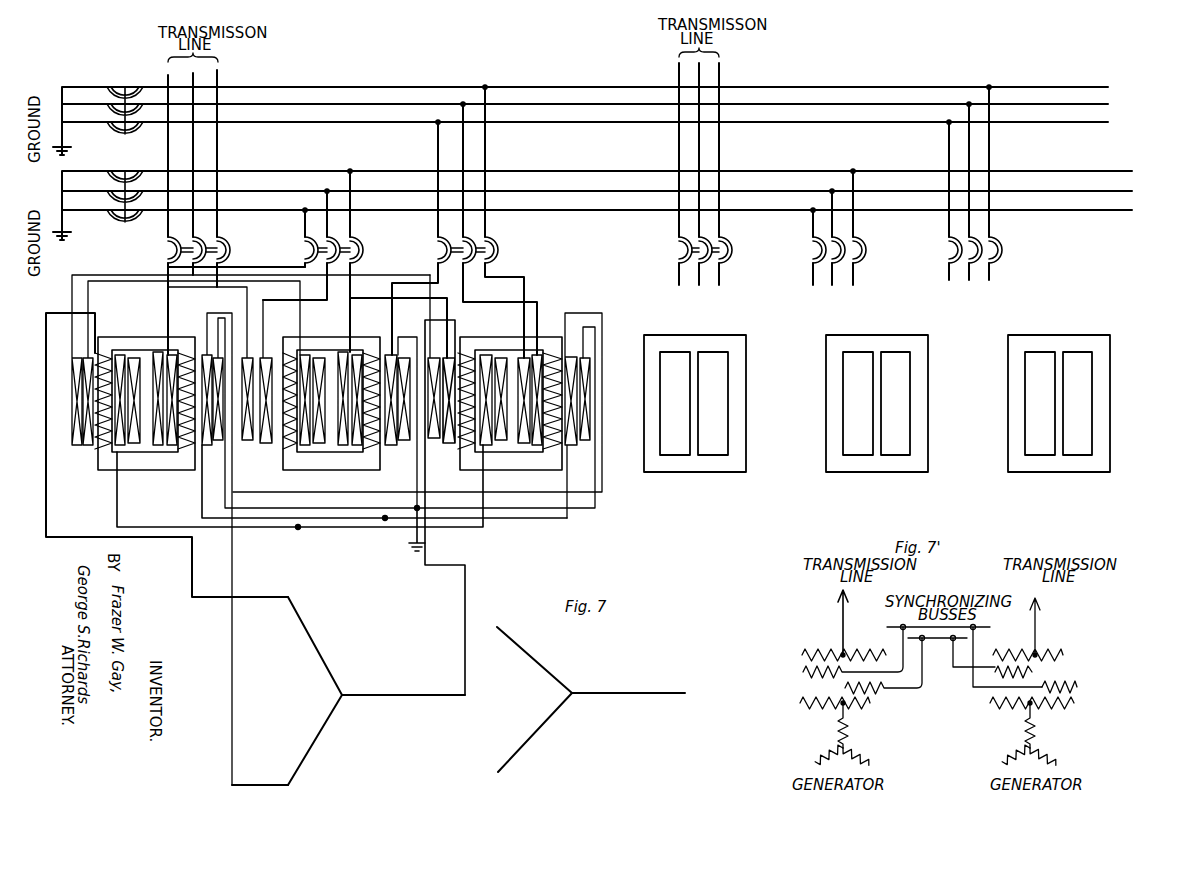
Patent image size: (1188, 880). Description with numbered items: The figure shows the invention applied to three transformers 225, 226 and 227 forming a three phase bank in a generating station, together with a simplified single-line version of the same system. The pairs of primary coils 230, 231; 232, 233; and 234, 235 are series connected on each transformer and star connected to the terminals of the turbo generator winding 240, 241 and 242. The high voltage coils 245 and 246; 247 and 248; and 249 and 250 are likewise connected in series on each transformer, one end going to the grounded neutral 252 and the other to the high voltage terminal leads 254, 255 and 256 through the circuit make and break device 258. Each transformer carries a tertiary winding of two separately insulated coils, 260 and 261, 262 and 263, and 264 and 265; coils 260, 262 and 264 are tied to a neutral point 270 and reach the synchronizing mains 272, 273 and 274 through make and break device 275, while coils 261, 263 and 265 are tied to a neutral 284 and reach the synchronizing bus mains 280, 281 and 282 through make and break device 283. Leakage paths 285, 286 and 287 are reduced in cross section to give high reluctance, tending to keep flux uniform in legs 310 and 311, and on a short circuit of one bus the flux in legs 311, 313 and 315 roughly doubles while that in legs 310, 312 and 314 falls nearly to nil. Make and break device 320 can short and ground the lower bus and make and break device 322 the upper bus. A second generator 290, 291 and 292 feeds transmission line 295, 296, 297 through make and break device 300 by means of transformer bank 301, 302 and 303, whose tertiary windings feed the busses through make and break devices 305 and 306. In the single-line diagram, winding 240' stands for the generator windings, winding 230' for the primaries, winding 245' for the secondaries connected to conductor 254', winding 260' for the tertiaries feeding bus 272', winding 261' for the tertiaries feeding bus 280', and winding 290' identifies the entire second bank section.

In FIG. 7, the make and break device 322 is at (112, 84).
In FIG. 7, the make and break device 320 is at (112, 220).
In FIG. 7, the high voltage terminal lead 254 is at (211, 209).
In FIG. 7, the high voltage terminal lead 255 is at (195, 72).
In FIG. 7, the high voltage terminal lead 256 is at (219, 80).
In FIG. 7, the circuit make and break device 258 is at (305, 251).
In FIG. 7, the synchronizing main 273 is at (308, 250).
In FIG. 7, the synchronizing main 272 is at (347, 263).
In FIG. 7, the synchronizing bus main 281 is at (396, 103).
In FIG. 7, the synchronizing bus main 282 is at (460, 87).
In FIG. 7, the circuit make and break device 275 is at (337, 248).
In FIG. 7, the circuit make and break device 283 is at (498, 248).
In FIG. 7, the synchronizing bus main 280 is at (580, 121).
In FIG. 7, the synchronizing main 274 is at (389, 171).
In FIG. 7, the transmission line conductor 295 is at (679, 76).
In FIG. 7, the transmission line conductor 296 is at (699, 66).
In FIG. 7, the transmission line conductor 297 is at (719, 75).
In FIG. 7, the make and break device 300 is at (728, 246).
In FIG. 7, the make and break device 305 is at (866, 246).
In FIG. 7, the make and break device 306 is at (1008, 246).
In FIG. 7, the transformer 225 is at (132, 326).
In FIG. 7, the transformer 226 is at (302, 337).
In FIG. 7, the transformer 227 is at (496, 337).
In FIG. 7, the magnetic leg 312 is at (287, 353).
In FIG. 7, the magnetic leg 313 is at (368, 350).
In FIG. 7, the magnetic leg 314 is at (475, 350).
In FIG. 7, the magnetic leg 315 is at (553, 350).
In FIG. 7, the transformer 301 is at (730, 342).
In FIG. 7, the transformer 302 is at (903, 342).
In FIG. 7, the transformer 303 is at (1078, 342).
In FIG. 7, the high voltage coil 245 is at (239, 368).
In FIG. 7, the tertiary coil 260 is at (180, 380).
In FIG. 7, the primary coil 230 is at (167, 455).
In FIG. 7, the magnetic leg 310 is at (122, 455).
In FIG. 7, the leakage path 285 is at (142, 453).
In FIG. 7, the magnetic leg 311 is at (164, 443).
In FIG. 7, the primary coil 231 is at (188, 450).
In FIG. 7, the tertiary coil 261 is at (213, 549).
In FIG. 7, the high voltage coil 246 is at (401, 413).
In FIG. 7, the high voltage coil 247 is at (211, 391).
In FIG. 7, the tertiary coil 262 is at (267, 397).
In FIG. 7, the primary coil 232 is at (300, 450).
In FIG. 7, the leakage path 286 is at (313, 427).
In FIG. 7, the primary coil 233 is at (373, 450).
In FIG. 7, the tertiary coil 263 is at (389, 426).
In FIG. 7, the high voltage coil 248 is at (406, 422).
In FIG. 7, the high voltage coil 249 is at (431, 386).
In FIG. 7, the tertiary coil 264 is at (445, 507).
In FIG. 7, the primary coil 234 is at (484, 450).
In FIG. 7, the leakage path 287 is at (512, 445).
In FIG. 7, the primary coil 235 is at (554, 447).
In FIG. 7, the tertiary coil 265 is at (417, 415).
In FIG. 7, the high voltage coil 250 is at (586, 445).
In FIG. 7, the neutral point 270 is at (300, 529).
In FIG. 7, the neutral 284 is at (385, 520).
In FIG. 7, the grounded neutral 252 is at (415, 533).
In FIG. 7, the turbo generator winding 240 is at (330, 691).
In FIG. 7, the turbo generator winding 241 is at (318, 728).
In FIG. 7, the turbo generator winding 242 is at (390, 695).
In FIG. 7, the generator winding 290 is at (535, 660).
In FIG. 7, the generator winding 291 is at (535, 735).
In FIG. 7, the generator winding 292 is at (628, 682).
In FIG. 7', the conductor 254' is at (821, 618).
In FIG. 7', the secondary winding 245' is at (838, 641).
In FIG. 7', the tertiary winding 260' is at (833, 655).
In FIG. 7', the tertiary winding 261' is at (891, 676).
In FIG. 7', the primary winding 230' is at (815, 714).
In FIG. 7', the generator winding 240' is at (857, 735).
In FIG. 7', the synchronizing bus 272' is at (982, 660).
In FIG. 7', the synchronizing bus 280' is at (1023, 629).
In FIG. 7', the generator winding 290' is at (1035, 732).